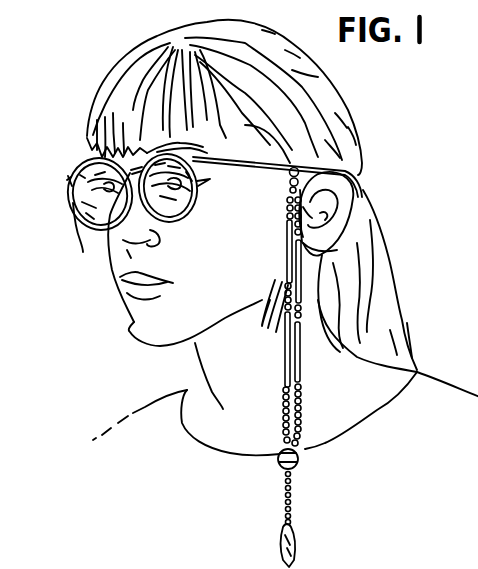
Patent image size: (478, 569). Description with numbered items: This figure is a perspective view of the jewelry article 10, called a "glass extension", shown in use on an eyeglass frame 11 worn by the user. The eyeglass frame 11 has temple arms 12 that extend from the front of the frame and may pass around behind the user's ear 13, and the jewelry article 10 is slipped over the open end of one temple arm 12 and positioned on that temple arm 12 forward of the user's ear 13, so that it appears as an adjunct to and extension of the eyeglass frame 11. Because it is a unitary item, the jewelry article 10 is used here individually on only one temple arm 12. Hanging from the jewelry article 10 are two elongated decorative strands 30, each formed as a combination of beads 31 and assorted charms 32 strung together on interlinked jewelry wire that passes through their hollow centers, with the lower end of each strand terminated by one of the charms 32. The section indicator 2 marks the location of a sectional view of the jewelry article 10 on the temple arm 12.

The jewelry article 10 is at (298, 368).
The eyeglass frame 11 is at (135, 212).
The temple arm 12 is at (86, 172).
The user's ear 13 is at (376, 190).
The section line 2 is at (277, 142).
The elongated decorative strand 30 is at (283, 425).
The beads 31 is at (282, 344).
The charms 32 is at (277, 475).